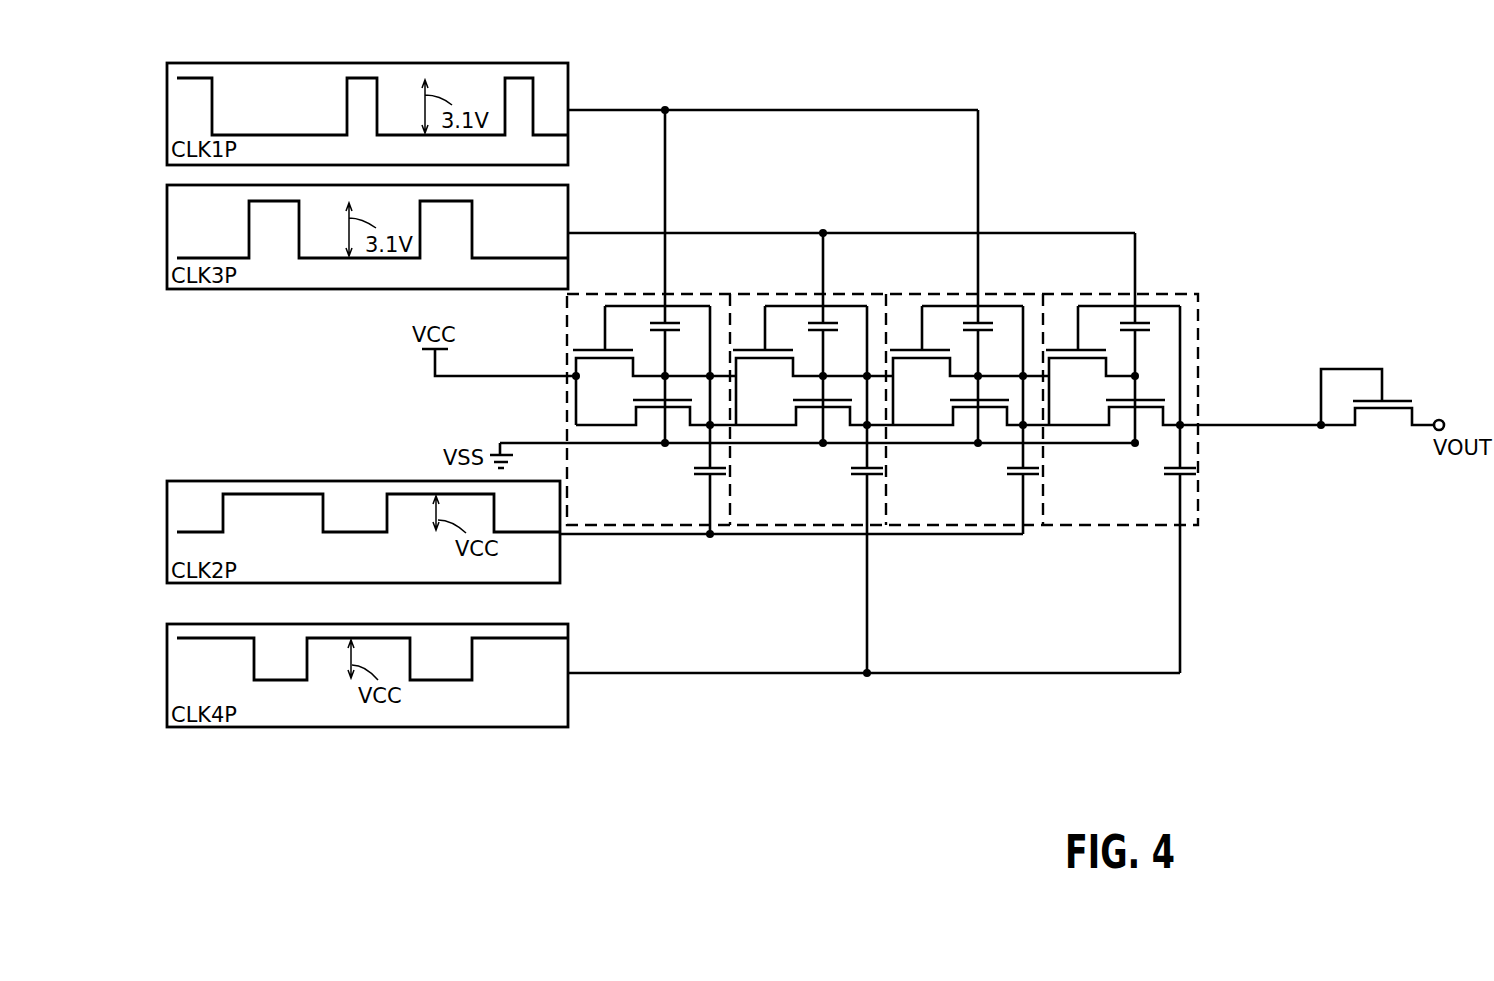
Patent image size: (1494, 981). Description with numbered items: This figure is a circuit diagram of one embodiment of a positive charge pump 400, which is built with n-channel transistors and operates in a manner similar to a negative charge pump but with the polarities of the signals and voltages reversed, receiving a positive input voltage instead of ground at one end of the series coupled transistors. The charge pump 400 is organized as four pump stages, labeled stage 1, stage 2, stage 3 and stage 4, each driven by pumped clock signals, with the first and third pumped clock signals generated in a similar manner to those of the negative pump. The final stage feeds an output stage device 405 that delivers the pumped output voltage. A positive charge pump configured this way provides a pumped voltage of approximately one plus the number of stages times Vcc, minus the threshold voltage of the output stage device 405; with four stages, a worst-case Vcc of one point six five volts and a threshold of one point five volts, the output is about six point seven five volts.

The charge pump 400 is at (1011, 350).
The output stage device 405 is at (1392, 399).
The stage 1 is at (654, 322).
The stage 2 is at (813, 453).
The stage 3 is at (969, 322).
The stage 4 is at (1121, 453).